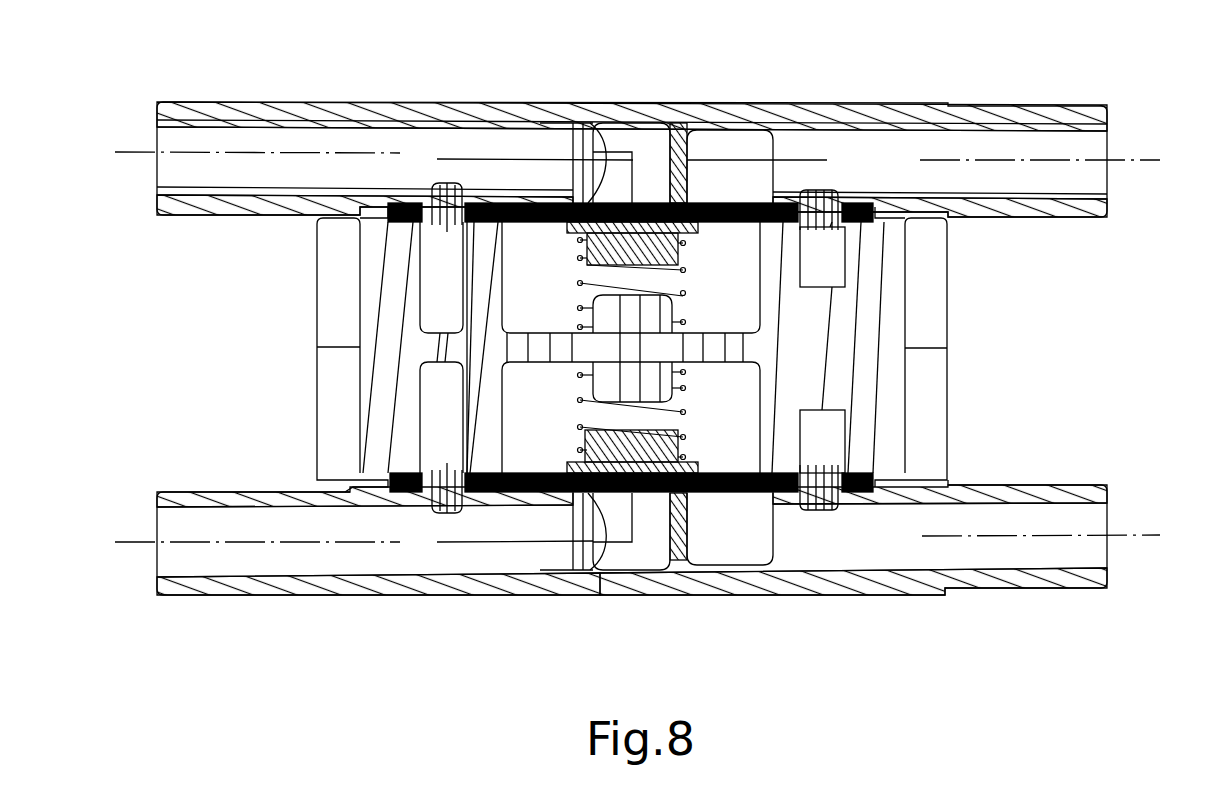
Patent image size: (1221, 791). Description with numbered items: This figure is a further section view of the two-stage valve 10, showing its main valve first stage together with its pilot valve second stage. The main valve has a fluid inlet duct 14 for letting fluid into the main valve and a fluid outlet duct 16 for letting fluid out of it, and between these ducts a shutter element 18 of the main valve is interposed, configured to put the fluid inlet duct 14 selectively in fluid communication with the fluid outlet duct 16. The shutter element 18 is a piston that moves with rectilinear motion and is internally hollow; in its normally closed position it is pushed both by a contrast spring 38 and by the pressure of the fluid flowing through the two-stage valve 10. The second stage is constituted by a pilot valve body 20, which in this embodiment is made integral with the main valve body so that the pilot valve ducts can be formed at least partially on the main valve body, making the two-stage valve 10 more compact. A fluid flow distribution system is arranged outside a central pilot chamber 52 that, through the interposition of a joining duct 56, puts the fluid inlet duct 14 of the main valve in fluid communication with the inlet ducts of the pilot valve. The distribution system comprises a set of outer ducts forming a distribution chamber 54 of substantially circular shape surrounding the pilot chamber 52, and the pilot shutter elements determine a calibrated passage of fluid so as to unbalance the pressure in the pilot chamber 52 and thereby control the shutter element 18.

The two-stage valve 10 is at (1130, 127).
The fluid inlet duct 14 is at (1050, 550).
The fluid outlet duct 16 is at (297, 555).
The shutter element 18 is at (648, 500).
The pilot valve body 20 is at (322, 270).
The contrast spring 38 is at (580, 425).
The pilot chamber 52 is at (733, 403).
The distribution chamber 54 is at (440, 423).
The joining duct 56 is at (826, 262).